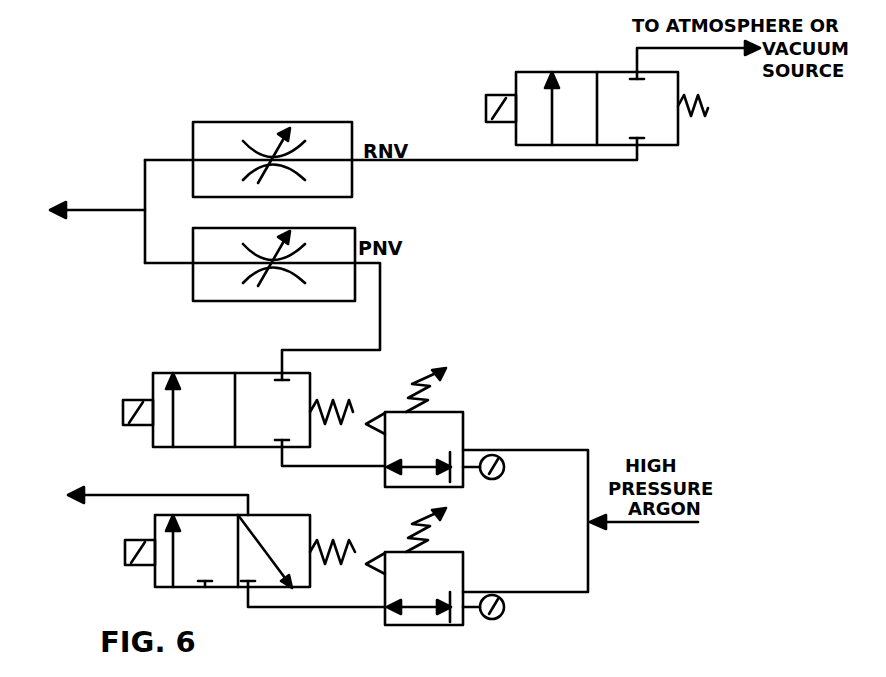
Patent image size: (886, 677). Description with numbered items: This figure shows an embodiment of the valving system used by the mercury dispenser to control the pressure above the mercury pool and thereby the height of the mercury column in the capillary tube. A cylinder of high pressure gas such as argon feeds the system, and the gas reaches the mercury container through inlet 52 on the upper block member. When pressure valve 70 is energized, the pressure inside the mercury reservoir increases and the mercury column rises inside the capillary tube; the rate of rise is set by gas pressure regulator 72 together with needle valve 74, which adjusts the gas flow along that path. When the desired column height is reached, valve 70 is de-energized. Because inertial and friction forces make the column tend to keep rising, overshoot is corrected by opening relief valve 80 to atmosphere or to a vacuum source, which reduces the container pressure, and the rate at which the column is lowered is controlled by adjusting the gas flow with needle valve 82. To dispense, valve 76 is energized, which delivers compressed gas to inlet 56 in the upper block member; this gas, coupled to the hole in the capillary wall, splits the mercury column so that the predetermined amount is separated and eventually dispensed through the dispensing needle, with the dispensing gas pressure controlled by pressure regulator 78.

The inlet 52 is at (122, 212).
The inlet 56 is at (124, 500).
The pressure valve 70 is at (217, 372).
The gas pressure regulator 72 is at (463, 413).
The needle valve 74 is at (353, 228).
The valve 76 is at (276, 515).
The pressure regulator 78 is at (463, 553).
The relief valve 80 is at (573, 72).
The needle valve 82 is at (270, 122).